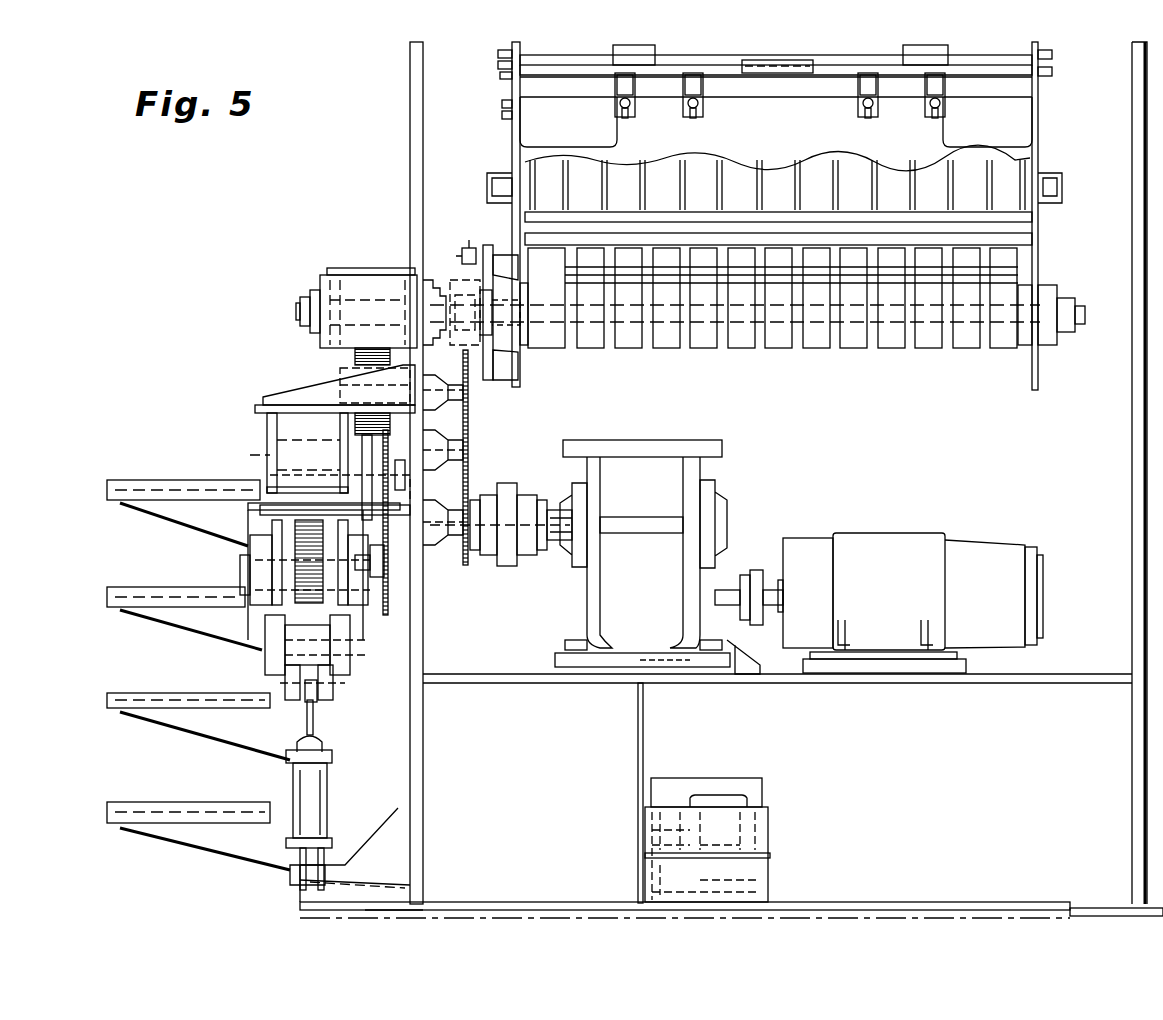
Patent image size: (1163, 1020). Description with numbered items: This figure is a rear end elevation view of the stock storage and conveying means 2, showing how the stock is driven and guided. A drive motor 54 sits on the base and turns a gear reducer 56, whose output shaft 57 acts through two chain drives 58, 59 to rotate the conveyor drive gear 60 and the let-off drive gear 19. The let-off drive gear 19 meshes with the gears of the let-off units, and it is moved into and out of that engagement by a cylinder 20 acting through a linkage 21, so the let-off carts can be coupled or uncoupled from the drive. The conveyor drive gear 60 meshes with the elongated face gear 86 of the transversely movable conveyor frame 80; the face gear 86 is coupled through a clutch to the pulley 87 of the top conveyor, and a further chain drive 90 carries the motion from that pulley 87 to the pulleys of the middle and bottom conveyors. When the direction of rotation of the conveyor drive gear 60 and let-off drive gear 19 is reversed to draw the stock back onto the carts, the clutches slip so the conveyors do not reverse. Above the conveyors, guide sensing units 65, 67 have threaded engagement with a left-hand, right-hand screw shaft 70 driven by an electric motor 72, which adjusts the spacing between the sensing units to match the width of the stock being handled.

The stock storage and conveying means 2 is at (404, 111).
The let-off drive gear 19 is at (315, 605).
The cylinder 20 is at (315, 800).
The linkage 21 is at (330, 692).
The drive motor 54 is at (883, 533).
The gear reducer 56 is at (668, 443).
The output shaft 57 is at (548, 503).
The chain drive 58 is at (470, 412).
The chain drive 59 is at (387, 617).
The conveyor drive gear 60 is at (352, 422).
The sensing unit 65 is at (627, 105).
The sensing unit 67 is at (690, 107).
The screw shaft 70 is at (565, 67).
The electric motor 72 is at (527, 131).
The frame 80 is at (505, 208).
The elongated face gear 86 is at (373, 270).
The pulley 87 is at (793, 349).
The chain drive 90 is at (468, 249).